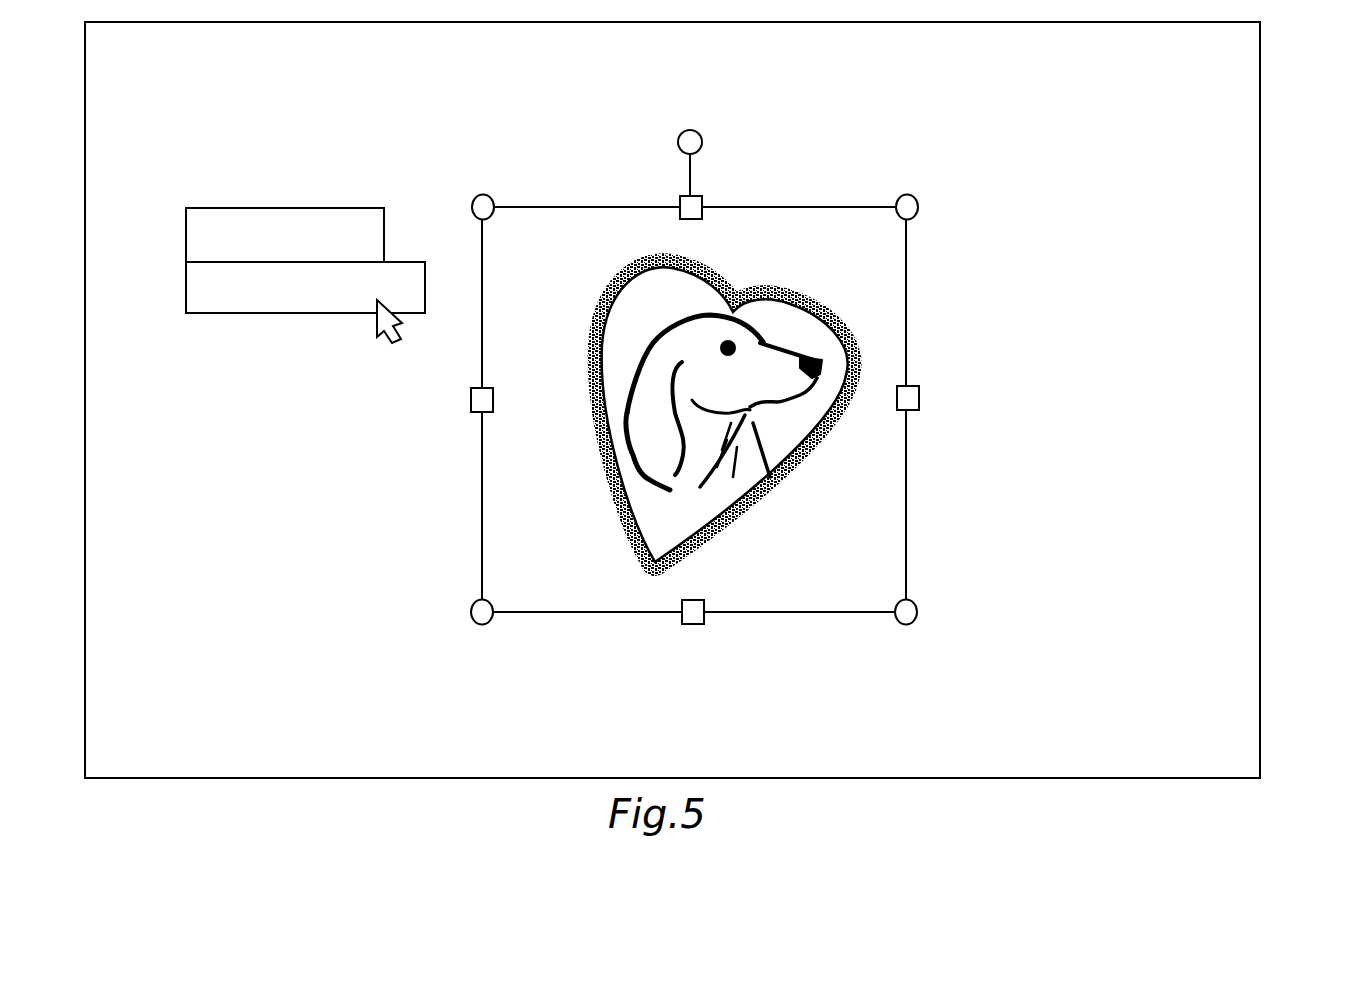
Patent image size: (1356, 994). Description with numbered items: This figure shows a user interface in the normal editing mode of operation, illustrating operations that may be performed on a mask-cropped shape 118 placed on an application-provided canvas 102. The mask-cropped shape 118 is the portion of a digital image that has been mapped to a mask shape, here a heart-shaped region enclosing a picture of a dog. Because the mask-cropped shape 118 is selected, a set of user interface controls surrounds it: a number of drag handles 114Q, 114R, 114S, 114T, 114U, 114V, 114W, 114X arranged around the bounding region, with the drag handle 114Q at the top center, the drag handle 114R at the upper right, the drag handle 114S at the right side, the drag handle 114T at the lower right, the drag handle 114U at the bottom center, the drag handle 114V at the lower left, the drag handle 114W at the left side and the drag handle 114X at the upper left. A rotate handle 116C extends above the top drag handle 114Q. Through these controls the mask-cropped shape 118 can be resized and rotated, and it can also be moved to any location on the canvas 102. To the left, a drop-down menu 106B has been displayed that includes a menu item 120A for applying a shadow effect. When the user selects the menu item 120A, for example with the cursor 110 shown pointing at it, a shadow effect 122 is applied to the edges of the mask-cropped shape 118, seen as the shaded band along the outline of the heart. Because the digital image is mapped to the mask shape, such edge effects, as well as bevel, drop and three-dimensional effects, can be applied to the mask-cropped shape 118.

The canvas 102 is at (1240, 105).
The drop-down menu 106B is at (186, 272).
The menu item 120A is at (272, 302).
The cursor 110 is at (392, 346).
The drag handle 114Q is at (693, 202).
The drag handle 114R is at (918, 207).
The drag handle 114S is at (918, 398).
The drag handle 114T is at (917, 610).
The drag handle 114U is at (692, 626).
The drag handle 114V is at (478, 626).
The drag handle 114W is at (470, 408).
The drag handle 114X is at (478, 198).
The rotate handle 116C is at (700, 136).
The mask-cropped shape 118 is at (660, 523).
The shadow effect 122 is at (748, 500).